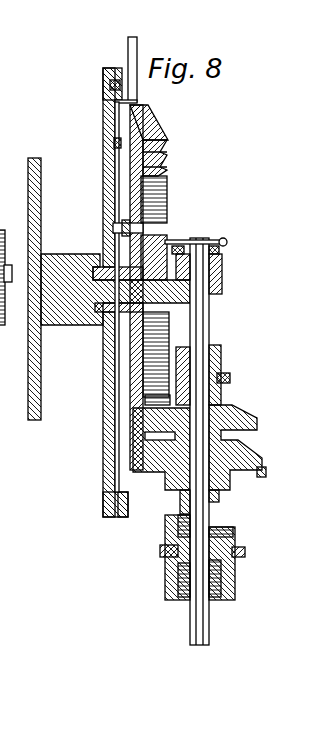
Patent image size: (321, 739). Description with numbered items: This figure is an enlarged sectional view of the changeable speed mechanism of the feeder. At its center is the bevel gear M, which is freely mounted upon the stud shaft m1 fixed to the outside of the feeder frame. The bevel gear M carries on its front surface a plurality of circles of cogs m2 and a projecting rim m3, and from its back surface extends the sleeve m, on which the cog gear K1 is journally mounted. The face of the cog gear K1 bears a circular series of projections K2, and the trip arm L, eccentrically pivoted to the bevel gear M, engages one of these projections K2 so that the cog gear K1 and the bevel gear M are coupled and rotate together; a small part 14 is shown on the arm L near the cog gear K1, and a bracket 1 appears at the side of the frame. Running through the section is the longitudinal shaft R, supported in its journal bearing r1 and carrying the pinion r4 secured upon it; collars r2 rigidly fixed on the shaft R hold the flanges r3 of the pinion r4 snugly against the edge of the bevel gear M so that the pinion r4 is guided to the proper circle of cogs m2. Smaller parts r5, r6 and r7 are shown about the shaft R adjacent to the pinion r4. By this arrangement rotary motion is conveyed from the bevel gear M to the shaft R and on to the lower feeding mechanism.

The support bar 1 is at (27, 174).
The sleeve m is at (98, 262).
The stud shaft m1 is at (62, 312).
The circles of cogs m2 is at (163, 138).
The projecting rim m3 is at (167, 208).
The bevel gear M is at (137, 113).
The cog gear K1 is at (103, 96).
The projections K2 is at (122, 90).
The trip arm L is at (127, 42).
The stop 14 is at (104, 145).
The longitudinal shaft R is at (212, 320).
The journal bearing r1 is at (222, 264).
The collars r2 is at (181, 498).
The flanges r3 is at (260, 477).
The pinion r4 is at (240, 418).
The sleeve r5 is at (222, 358).
The ring r6 is at (228, 382).
The set screw r7 is at (231, 377).